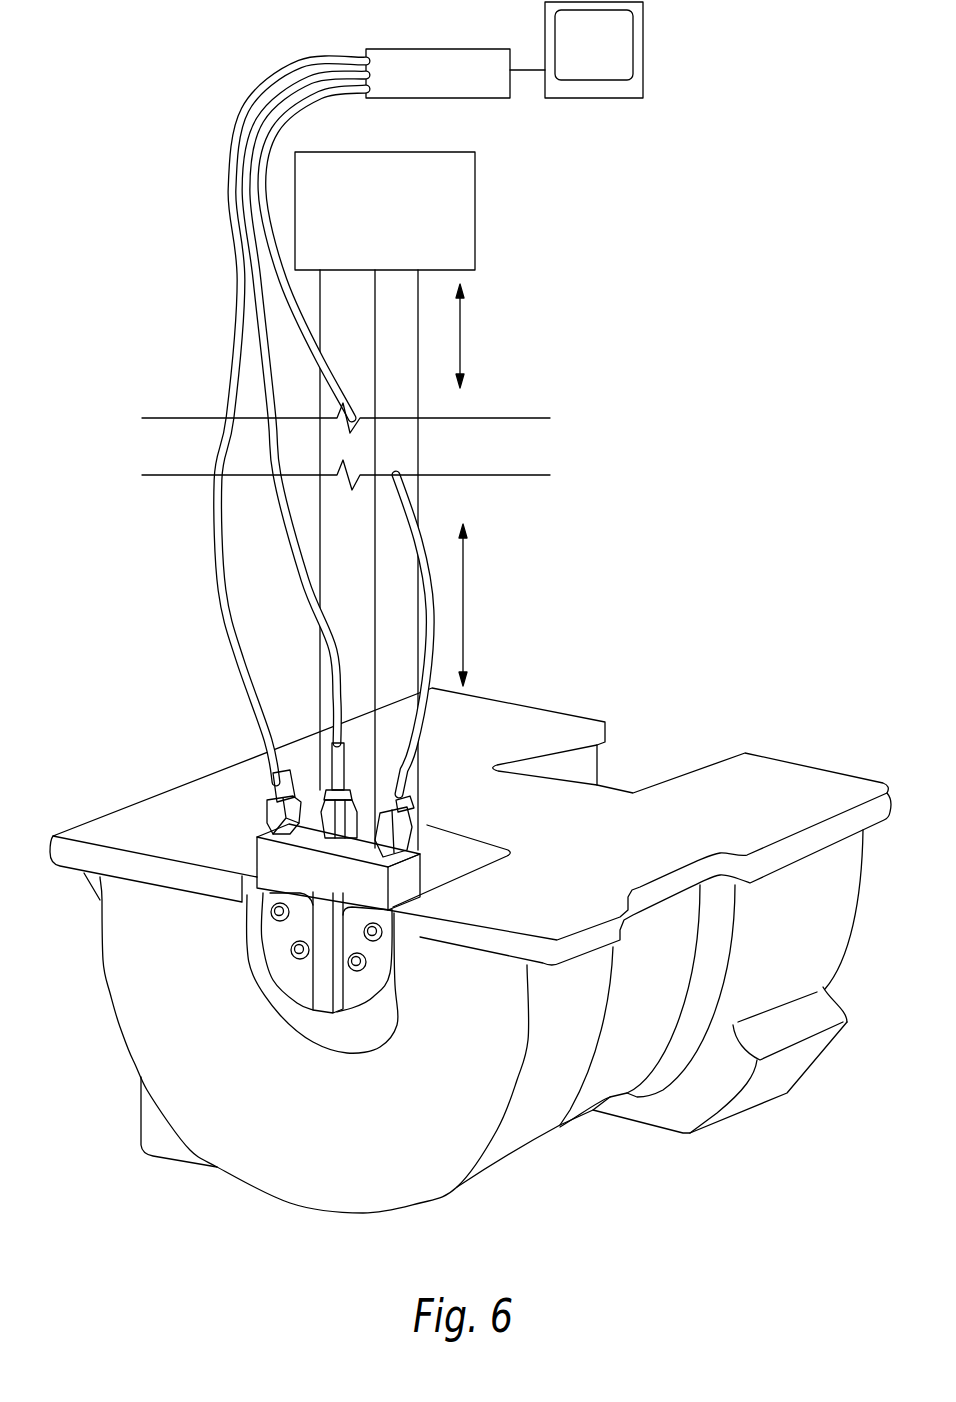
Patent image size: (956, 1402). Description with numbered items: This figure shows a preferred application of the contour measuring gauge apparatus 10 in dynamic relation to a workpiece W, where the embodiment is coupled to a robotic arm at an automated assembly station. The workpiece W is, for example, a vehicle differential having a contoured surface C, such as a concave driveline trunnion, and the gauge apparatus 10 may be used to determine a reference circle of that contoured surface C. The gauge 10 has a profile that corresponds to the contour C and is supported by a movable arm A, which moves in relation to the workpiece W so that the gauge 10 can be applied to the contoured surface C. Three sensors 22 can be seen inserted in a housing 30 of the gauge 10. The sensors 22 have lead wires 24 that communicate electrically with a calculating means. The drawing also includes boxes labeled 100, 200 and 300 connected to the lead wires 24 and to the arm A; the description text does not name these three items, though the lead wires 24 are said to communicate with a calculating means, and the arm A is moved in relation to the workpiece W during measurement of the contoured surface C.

The contour measuring gauge apparatus 10 is at (180, 626).
The sensors 22 is at (417, 767).
The lead wires 24 is at (230, 590).
The housing 30 is at (280, 858).
The processing unit 100 is at (459, 89).
The display 200 is at (616, 57).
The positioning device 300 is at (416, 226).
The movable arm A is at (362, 505).
The contoured surface C is at (304, 1026).
The workpiece W is at (457, 1120).